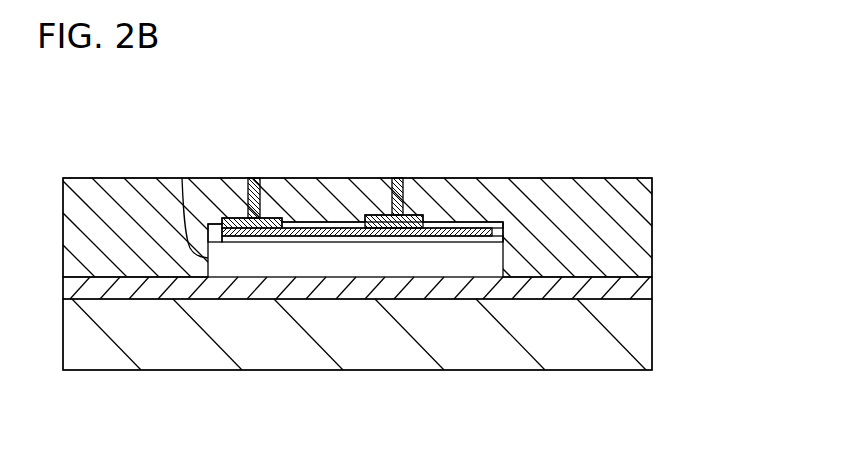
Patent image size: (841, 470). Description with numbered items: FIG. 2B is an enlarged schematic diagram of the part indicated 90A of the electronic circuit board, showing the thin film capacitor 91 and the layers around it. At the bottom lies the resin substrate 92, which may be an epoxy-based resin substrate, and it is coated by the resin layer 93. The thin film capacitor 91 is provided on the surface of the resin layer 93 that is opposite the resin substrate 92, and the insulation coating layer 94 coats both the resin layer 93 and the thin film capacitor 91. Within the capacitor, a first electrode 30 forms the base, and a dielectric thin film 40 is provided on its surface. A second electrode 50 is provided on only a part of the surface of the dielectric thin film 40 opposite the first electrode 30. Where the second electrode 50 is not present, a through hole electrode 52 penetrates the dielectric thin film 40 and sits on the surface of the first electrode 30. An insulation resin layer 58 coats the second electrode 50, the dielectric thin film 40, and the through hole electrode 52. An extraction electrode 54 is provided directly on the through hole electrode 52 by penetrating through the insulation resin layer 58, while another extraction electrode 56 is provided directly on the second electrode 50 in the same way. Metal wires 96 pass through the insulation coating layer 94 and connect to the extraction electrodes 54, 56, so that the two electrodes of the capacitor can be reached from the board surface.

The enlarged part of the electronic circuit board 90A is at (637, 109).
The insulation coating layer 94 is at (638, 220).
The resin layer 93 is at (638, 284).
The resin substrate 92 is at (638, 330).
The first electrode 30 is at (182, 178).
The dielectric thin film 40 is at (428, 177).
The second electrode 50 is at (298, 243).
The through hole electrode 52 is at (268, 218).
The extraction electrode 54 is at (233, 218).
The extraction electrode 56 is at (420, 215).
The insulation resin layer 58 is at (488, 222).
The metal wires 96 is at (255, 178).
The thin film capacitor 91 is at (509, 227).